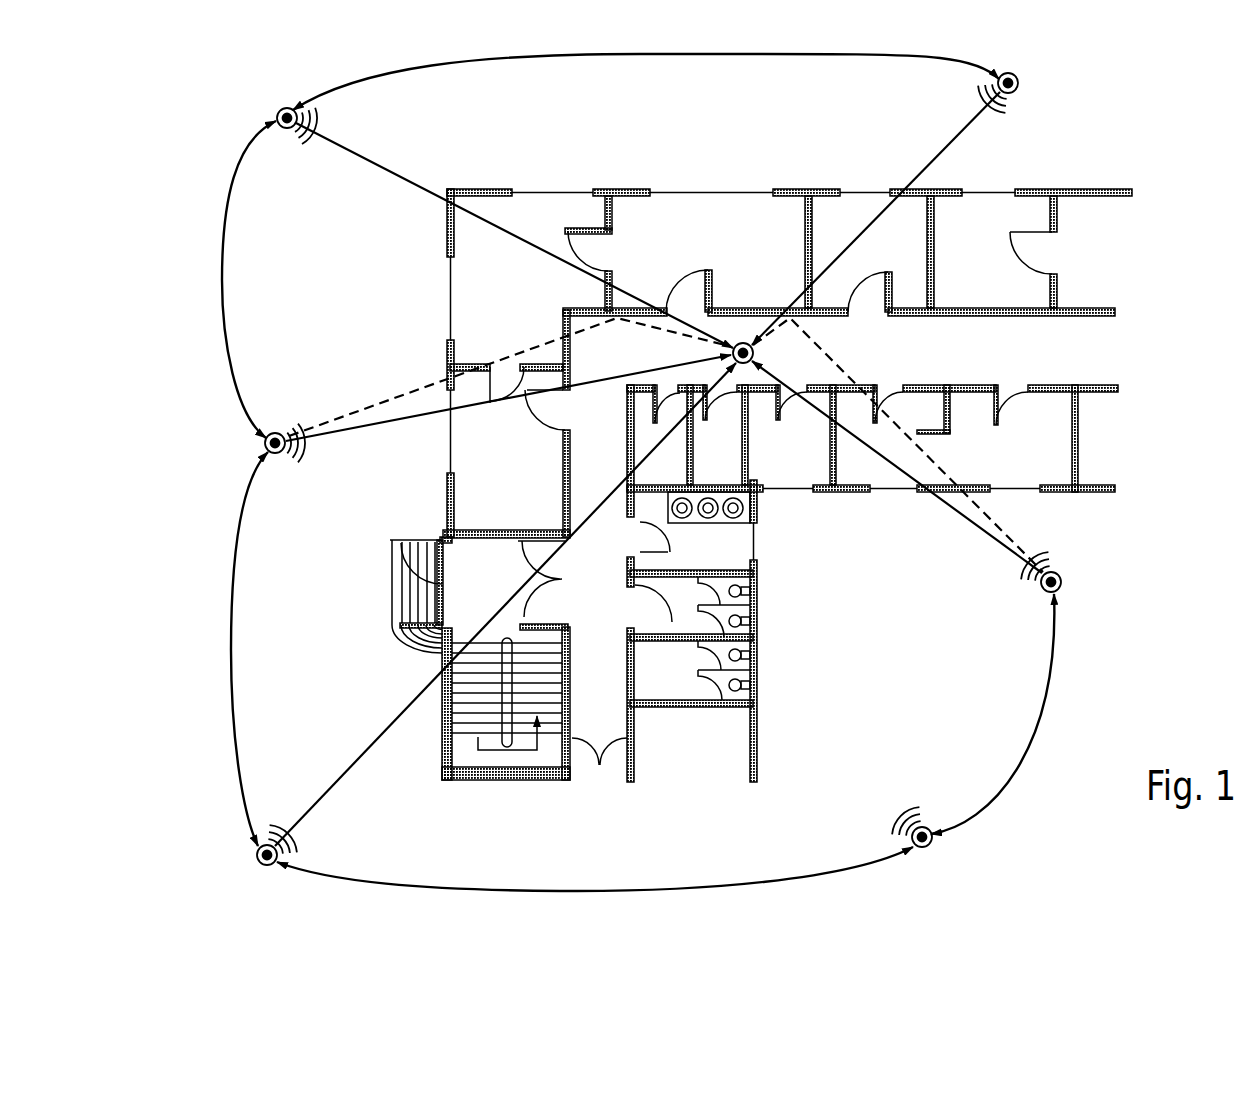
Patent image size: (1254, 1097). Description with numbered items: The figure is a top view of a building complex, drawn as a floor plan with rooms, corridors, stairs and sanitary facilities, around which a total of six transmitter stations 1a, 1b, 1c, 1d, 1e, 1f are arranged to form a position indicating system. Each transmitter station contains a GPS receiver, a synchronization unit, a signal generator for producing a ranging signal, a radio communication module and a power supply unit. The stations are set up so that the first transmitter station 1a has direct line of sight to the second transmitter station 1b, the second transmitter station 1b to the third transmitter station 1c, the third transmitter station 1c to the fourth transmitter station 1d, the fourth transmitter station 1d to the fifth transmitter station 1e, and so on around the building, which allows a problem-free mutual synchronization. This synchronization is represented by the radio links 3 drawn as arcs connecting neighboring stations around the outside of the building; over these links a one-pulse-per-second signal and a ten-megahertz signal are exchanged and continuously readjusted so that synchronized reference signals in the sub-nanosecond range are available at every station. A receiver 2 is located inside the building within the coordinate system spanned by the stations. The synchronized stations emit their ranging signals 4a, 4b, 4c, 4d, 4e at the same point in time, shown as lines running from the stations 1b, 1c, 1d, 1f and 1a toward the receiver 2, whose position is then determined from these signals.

The first transmitter station 1a is at (1020, 84).
The second transmitter station 1b is at (280, 108).
The third transmitter station 1c is at (275, 432).
The fourth transmitter station 1d is at (256, 858).
The fifth transmitter station 1e is at (930, 848).
The sixth transmitter station 1f is at (1062, 582).
The receiver 2 is at (743, 342).
The radio links 3 is at (589, 51).
The ranging signal 4a is at (390, 165).
The ranging signal 4b is at (402, 428).
The ranging signal 4c is at (392, 730).
The ranging signal 4d is at (940, 512).
The ranging signal 4e is at (936, 155).